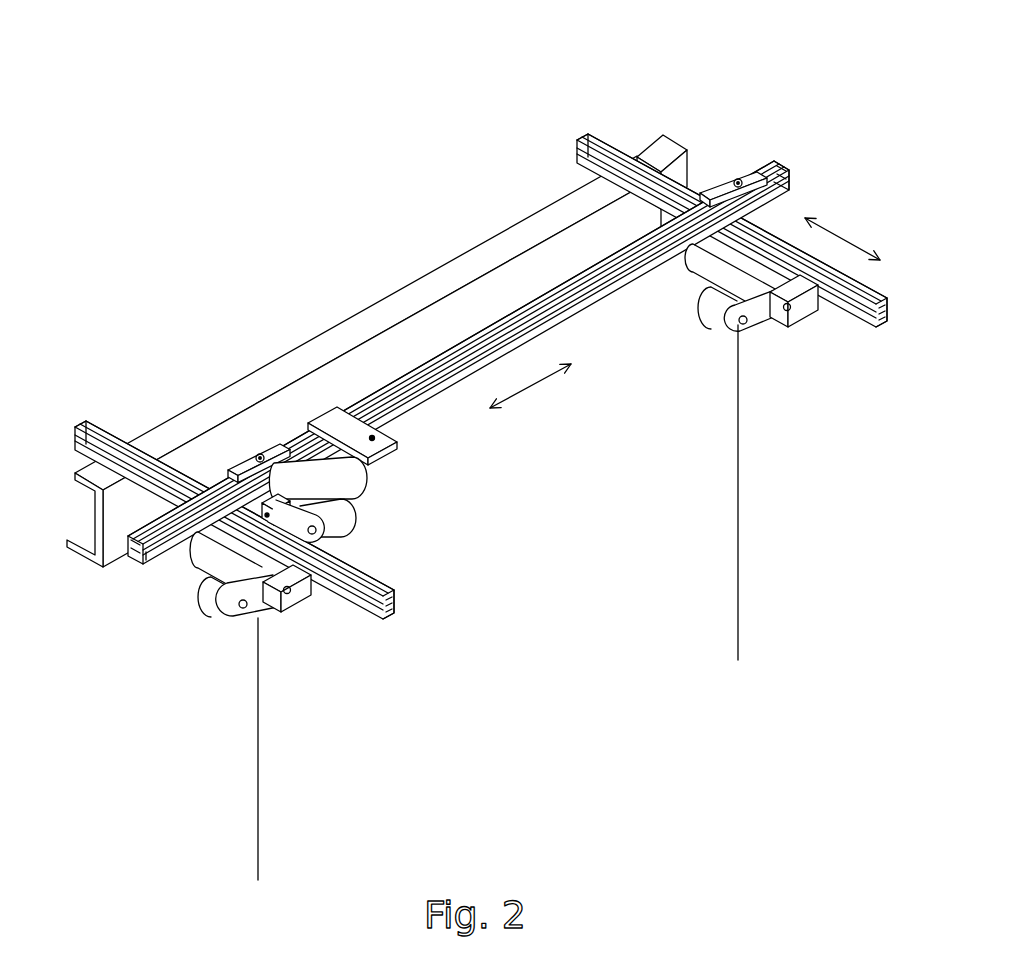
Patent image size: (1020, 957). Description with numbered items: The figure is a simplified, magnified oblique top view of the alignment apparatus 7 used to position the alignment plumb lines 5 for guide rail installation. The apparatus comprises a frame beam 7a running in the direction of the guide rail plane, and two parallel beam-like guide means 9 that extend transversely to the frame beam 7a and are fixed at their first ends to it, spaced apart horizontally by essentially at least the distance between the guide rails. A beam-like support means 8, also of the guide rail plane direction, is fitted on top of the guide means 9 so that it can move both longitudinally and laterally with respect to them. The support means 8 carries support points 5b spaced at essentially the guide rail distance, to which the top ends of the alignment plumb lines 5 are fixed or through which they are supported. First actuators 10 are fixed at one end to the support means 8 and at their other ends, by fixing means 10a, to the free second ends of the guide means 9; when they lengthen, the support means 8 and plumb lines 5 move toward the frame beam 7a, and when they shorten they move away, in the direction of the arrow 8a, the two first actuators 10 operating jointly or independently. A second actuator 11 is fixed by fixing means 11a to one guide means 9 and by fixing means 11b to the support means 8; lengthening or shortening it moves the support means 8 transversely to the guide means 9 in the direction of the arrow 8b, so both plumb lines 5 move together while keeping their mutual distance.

The alignment apparatus 7 is at (320, 120).
The frame beam 7a is at (485, 245).
The guide means 9 is at (107, 425).
The support means 8 is at (590, 305).
The arrow 8a is at (842, 235).
The arrow 8b is at (546, 400).
The support point 5b is at (258, 455).
The alignment plumb line 5 is at (260, 785).
The first actuator 10 is at (206, 600).
The fixing means 10a is at (298, 620).
The second actuator 11 is at (352, 512).
The fixing means 11a is at (364, 547).
The fixing means 11b is at (402, 440).